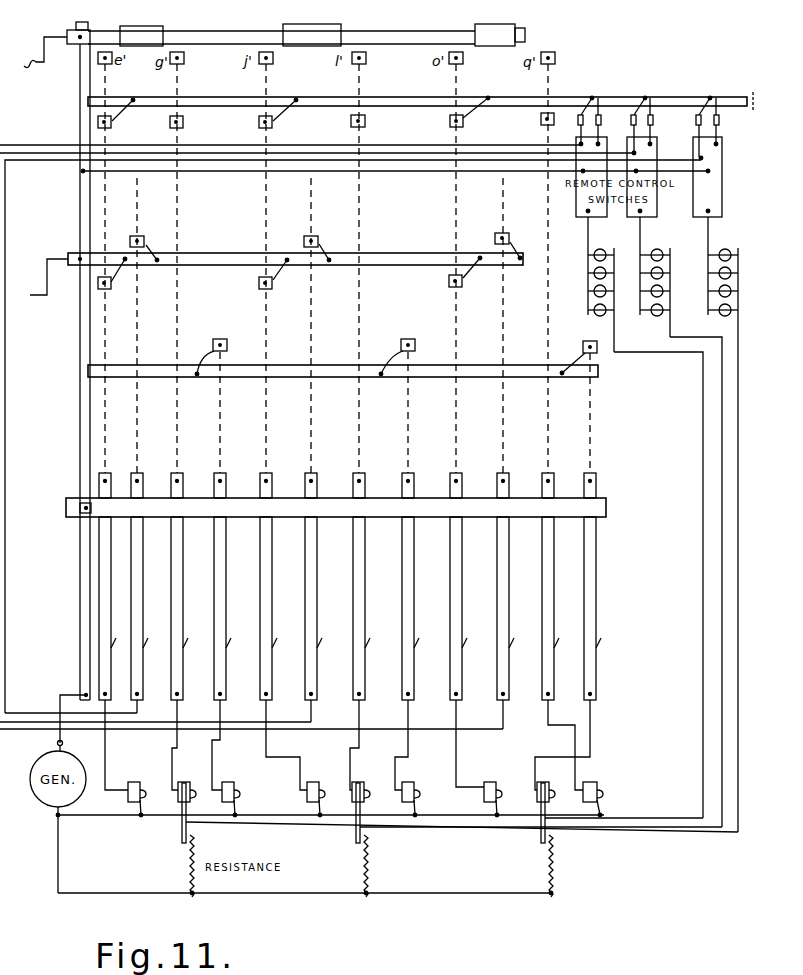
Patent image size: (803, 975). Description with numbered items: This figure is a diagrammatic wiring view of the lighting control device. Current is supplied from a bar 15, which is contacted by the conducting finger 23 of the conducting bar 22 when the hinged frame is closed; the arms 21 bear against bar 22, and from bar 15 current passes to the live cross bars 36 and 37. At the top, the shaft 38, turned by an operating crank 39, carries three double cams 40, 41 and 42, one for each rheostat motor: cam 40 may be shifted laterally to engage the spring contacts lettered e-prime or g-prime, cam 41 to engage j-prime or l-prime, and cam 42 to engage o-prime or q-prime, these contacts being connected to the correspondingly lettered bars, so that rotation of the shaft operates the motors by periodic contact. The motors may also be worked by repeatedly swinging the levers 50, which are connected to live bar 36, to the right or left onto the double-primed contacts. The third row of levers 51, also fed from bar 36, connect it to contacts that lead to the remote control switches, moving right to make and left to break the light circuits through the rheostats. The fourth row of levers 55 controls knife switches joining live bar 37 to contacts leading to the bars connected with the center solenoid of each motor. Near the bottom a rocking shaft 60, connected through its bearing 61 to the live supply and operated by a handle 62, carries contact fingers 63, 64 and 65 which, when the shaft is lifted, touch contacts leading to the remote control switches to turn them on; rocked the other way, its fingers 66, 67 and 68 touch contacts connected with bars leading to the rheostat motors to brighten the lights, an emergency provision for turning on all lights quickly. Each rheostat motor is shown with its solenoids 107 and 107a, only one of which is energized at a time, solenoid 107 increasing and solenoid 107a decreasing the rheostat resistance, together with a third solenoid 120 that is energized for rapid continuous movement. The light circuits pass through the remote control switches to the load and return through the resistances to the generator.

The bar 15 is at (88, 662).
The arms 21 is at (105, 507).
The conducting bar 22 is at (336, 508).
The conducting finger 23 is at (80, 517).
The cross bar 36 is at (207, 105).
The cross bar 37 is at (317, 373).
The shaft 38 is at (212, 31).
The operating crank 39 is at (42, 68).
The double cam 40 is at (141, 36).
The double cam 41 is at (312, 35).
The double cam 42 is at (500, 35).
The levers 50 is at (128, 106).
The levers 51 is at (653, 126).
The levers 55 is at (223, 378).
The rocking shaft 60 is at (209, 257).
The bearing 61 is at (79, 267).
The handle 62 is at (45, 284).
The contact finger 63 is at (147, 248).
The contact finger 64 is at (329, 256).
The contact finger 65 is at (521, 255).
The finger 66 is at (131, 269).
The finger 67 is at (277, 277).
The finger 68 is at (462, 274).
The solenoid 107 is at (134, 782).
The solenoid 107a is at (226, 782).
The third solenoid 120 is at (184, 782).